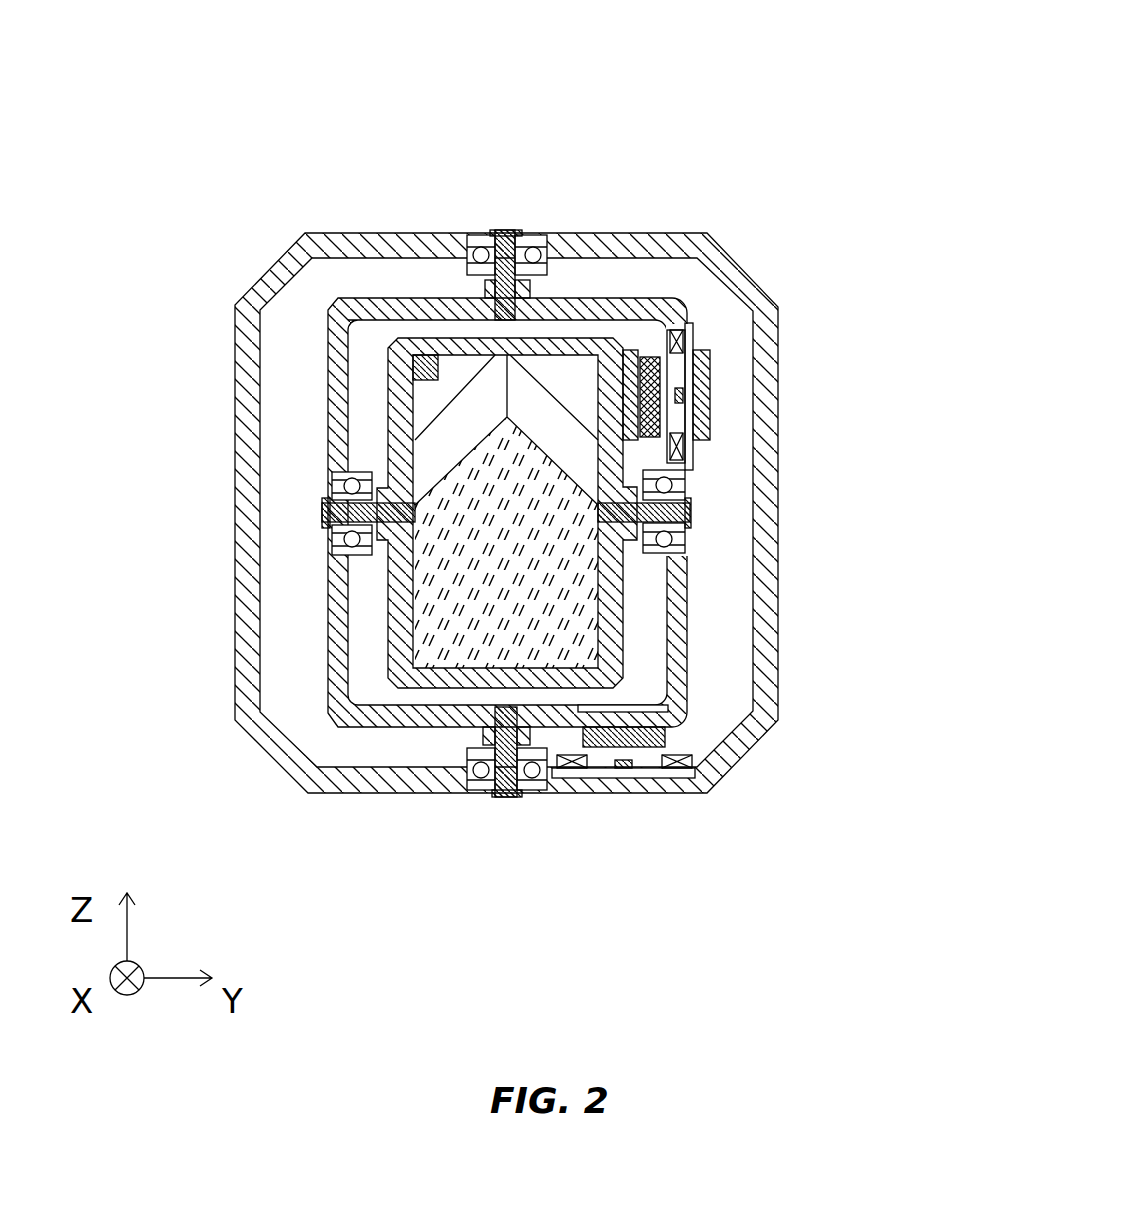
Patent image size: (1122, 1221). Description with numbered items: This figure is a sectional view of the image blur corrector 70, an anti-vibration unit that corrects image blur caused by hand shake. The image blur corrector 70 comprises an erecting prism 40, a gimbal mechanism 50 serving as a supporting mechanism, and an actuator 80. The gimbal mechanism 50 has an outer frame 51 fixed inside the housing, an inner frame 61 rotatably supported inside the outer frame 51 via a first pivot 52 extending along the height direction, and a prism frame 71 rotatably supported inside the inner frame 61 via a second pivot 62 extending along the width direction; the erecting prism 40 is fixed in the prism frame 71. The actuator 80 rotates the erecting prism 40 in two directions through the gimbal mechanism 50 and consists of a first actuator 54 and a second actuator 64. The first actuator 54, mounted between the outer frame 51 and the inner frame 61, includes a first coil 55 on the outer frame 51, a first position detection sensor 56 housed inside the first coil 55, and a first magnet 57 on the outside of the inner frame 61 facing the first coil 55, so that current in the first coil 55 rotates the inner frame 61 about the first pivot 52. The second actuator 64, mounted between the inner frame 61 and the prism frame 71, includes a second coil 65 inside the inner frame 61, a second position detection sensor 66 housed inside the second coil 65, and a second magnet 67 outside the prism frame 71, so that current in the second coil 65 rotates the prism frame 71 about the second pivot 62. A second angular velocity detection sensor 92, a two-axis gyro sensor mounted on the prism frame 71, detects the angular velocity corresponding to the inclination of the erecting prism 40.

The image blur corrector 70 is at (539, 488).
The gimbal mechanism 50 is at (539, 532).
The outer frame 51 is at (280, 757).
The inner frame 61 is at (327, 667).
The prism frame 71 is at (390, 600).
The second angular velocity detection sensor 92 is at (413, 363).
The erecting prism 40 is at (458, 460).
The second pivot 62 is at (325, 511).
The first pivot 52 is at (505, 230).
The actuator 80 is at (767, 552).
The second actuator 64 is at (802, 310).
The second magnet 67 is at (647, 352).
The second coil 65 is at (684, 450).
The second position detection sensor 66 is at (684, 395).
The first actuator 54 is at (753, 813).
The first magnet 57 is at (668, 736).
The first coil 55 is at (560, 778).
The first position detection sensor 56 is at (625, 768).